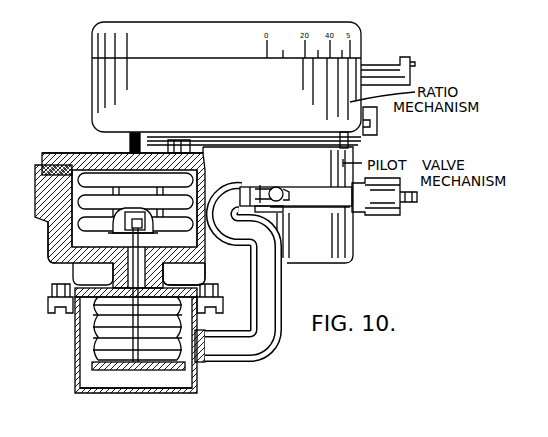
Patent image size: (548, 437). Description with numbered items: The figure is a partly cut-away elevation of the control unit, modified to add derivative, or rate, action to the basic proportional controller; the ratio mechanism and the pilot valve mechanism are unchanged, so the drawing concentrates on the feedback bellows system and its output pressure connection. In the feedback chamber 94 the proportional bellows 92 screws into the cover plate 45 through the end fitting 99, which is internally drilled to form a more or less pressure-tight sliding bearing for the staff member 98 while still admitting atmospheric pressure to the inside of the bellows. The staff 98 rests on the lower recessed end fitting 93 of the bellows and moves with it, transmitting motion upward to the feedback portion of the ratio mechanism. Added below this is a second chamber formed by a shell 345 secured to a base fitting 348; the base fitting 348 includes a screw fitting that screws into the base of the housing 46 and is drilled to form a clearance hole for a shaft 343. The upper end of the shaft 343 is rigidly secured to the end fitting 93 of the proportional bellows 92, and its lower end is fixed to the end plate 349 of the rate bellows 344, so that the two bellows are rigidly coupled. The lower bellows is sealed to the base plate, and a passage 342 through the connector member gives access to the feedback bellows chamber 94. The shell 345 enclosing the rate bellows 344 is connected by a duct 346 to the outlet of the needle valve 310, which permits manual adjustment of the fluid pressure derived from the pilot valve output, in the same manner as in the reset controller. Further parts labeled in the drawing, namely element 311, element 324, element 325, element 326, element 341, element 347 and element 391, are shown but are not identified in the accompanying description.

The cover plate 45 is at (42, 157).
The housing 46 is at (48, 186).
The bellows 92 is at (101, 236).
The end fitting 93 is at (126, 229).
The feedback chamber 94 is at (78, 170).
The staff member 98 is at (133, 206).
The end fitting 99 is at (133, 150).
The needle valve 310 is at (322, 192).
The valve fitting 311 is at (286, 188).
The valve seat 324 is at (262, 187).
The valve plate 325 is at (260, 204).
The ball 326 is at (277, 188).
The valve member 341 is at (140, 230).
The passage 342 is at (130, 320).
The shaft 343 is at (138, 345).
The rate bellows 344 is at (92, 343).
The shell 345 is at (195, 370).
The duct 346 is at (268, 343).
The casing bottom 347 is at (83, 379).
The base fitting 348 is at (184, 290).
The end plate 349 is at (153, 362).
The housing 391 is at (198, 170).